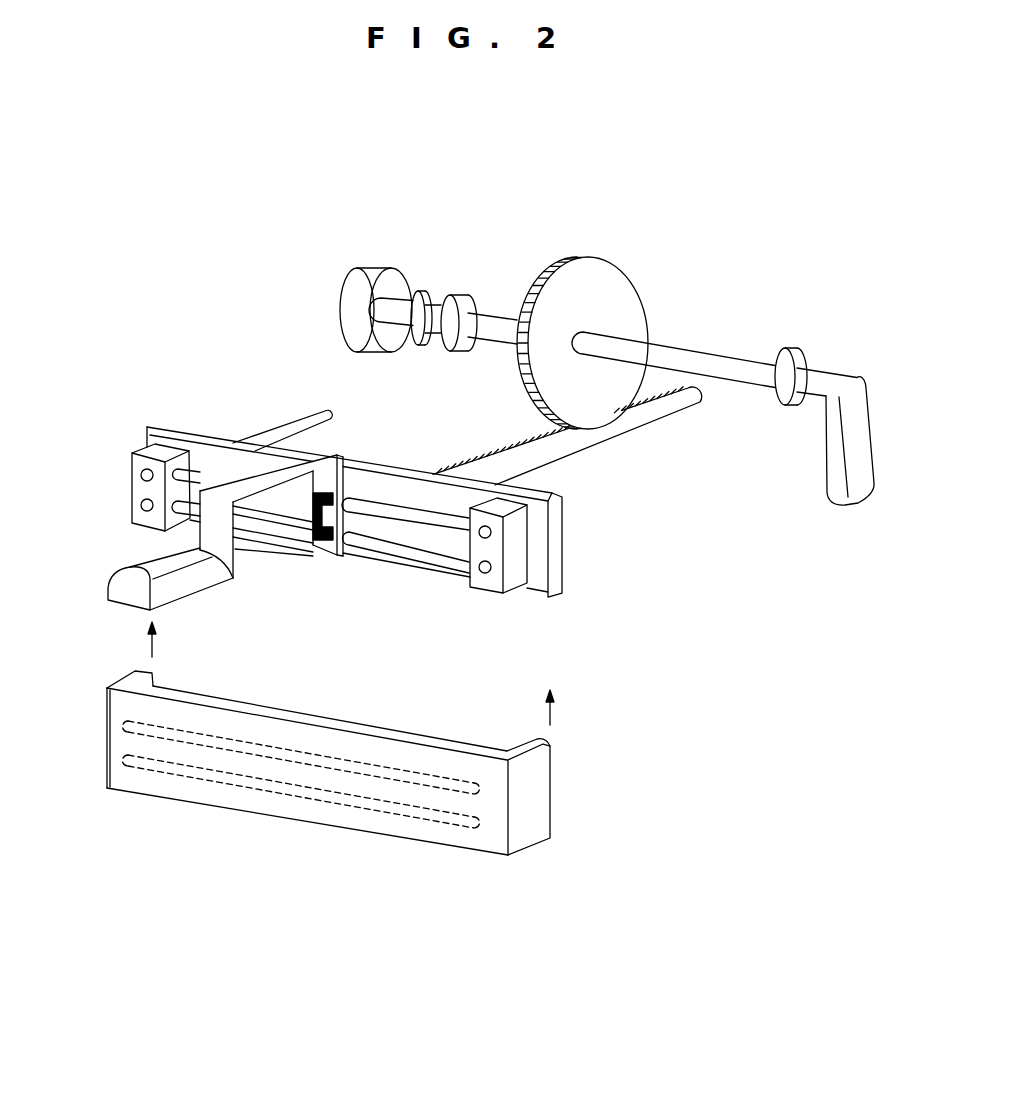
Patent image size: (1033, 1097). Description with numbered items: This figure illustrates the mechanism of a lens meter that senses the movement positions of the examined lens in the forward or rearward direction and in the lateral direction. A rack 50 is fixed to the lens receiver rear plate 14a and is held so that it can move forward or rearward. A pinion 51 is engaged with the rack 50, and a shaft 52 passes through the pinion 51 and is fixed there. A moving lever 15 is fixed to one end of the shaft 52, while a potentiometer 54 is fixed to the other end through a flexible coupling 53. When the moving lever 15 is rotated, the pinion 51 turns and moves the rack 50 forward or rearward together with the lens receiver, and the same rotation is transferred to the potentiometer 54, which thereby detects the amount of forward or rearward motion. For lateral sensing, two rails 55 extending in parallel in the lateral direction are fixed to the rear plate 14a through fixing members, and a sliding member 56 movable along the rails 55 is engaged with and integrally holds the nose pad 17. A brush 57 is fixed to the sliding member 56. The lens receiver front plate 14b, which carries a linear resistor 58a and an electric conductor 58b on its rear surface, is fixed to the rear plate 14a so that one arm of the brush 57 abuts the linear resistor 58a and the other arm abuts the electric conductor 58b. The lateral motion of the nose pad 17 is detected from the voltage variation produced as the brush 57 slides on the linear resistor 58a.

The lens receiver rear plate 14a is at (542, 553).
The lens receiver front plate 14b is at (530, 796).
The moving lever 15 is at (828, 383).
The nose pad 17 is at (157, 572).
The rack 50 is at (523, 447).
The pinion 51 is at (597, 300).
The shaft 52 is at (687, 360).
The flexible coupling 53 is at (467, 300).
The potentiometer 54 is at (368, 278).
The rails 55 is at (402, 512).
The sliding member 56 is at (348, 527).
The brush 57 is at (315, 547).
The linear resistor 58a is at (420, 817).
The electric conductor 58b is at (383, 777).